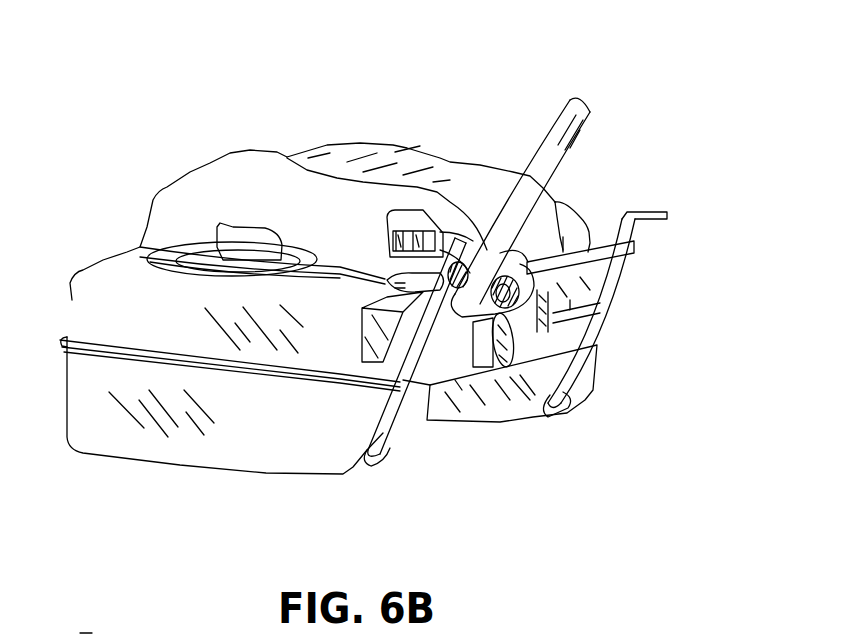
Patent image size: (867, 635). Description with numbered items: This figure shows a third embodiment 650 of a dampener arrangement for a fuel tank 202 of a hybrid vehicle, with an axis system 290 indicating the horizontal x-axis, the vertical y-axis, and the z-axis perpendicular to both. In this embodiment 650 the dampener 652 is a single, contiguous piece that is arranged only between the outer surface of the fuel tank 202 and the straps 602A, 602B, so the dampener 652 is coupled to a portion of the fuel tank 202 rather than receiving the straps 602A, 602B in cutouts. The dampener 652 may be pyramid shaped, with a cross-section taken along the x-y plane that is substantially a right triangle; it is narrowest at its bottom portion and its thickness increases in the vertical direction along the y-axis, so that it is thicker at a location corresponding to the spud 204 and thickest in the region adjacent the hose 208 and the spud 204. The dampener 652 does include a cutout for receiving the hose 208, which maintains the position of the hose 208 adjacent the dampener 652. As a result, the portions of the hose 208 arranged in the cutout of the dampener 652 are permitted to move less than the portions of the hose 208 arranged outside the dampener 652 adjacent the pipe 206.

The fuel tank 202 is at (210, 163).
The spud 204 is at (385, 279).
The pipe 206 is at (543, 148).
The hose 208 is at (412, 277).
The strap 602A is at (390, 415).
The strap 602B is at (643, 217).
The third embodiment 650 is at (583, 52).
The dampener 652 is at (620, 277).
The axis system 290 is at (111, 625).